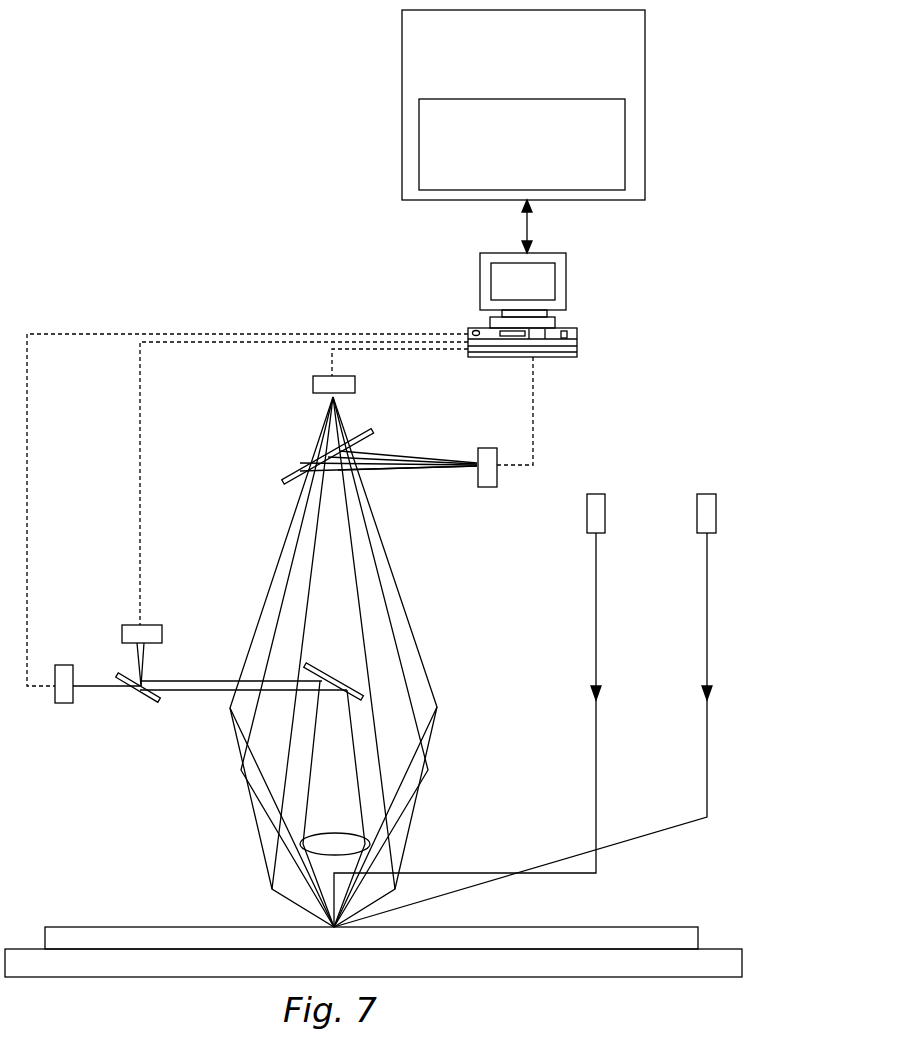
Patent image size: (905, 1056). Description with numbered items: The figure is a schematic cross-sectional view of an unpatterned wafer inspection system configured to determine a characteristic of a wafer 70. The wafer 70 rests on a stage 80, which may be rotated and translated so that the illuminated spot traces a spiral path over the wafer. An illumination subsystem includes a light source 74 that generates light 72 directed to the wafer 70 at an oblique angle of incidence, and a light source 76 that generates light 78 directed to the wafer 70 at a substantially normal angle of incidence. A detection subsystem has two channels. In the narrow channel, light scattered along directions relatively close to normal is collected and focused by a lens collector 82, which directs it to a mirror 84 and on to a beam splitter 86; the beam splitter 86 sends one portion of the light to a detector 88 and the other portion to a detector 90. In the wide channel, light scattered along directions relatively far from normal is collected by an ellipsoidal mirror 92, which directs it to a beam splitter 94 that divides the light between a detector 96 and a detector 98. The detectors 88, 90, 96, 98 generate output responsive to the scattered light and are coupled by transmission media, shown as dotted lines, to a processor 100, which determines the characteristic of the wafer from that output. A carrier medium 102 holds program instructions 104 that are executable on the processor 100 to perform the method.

The wafer 70 is at (698, 927).
The light 72 is at (709, 644).
The light source 74 is at (717, 511).
The light source 76 is at (606, 511).
The light 78 is at (598, 644).
The stage 80 is at (742, 967).
The lens collector 82 is at (318, 838).
The mirror 84 is at (318, 667).
The beam splitter 86 is at (147, 703).
The detector 88 is at (61, 706).
The detector 90 is at (163, 634).
The ellipsoidal mirror 92 is at (425, 818).
The beam splitter 94 is at (284, 476).
The detector 96 is at (355, 383).
The detector 98 is at (478, 450).
The processor 100 is at (577, 341).
The carrier medium 102 is at (645, 38).
The program instructions 104 is at (626, 150).